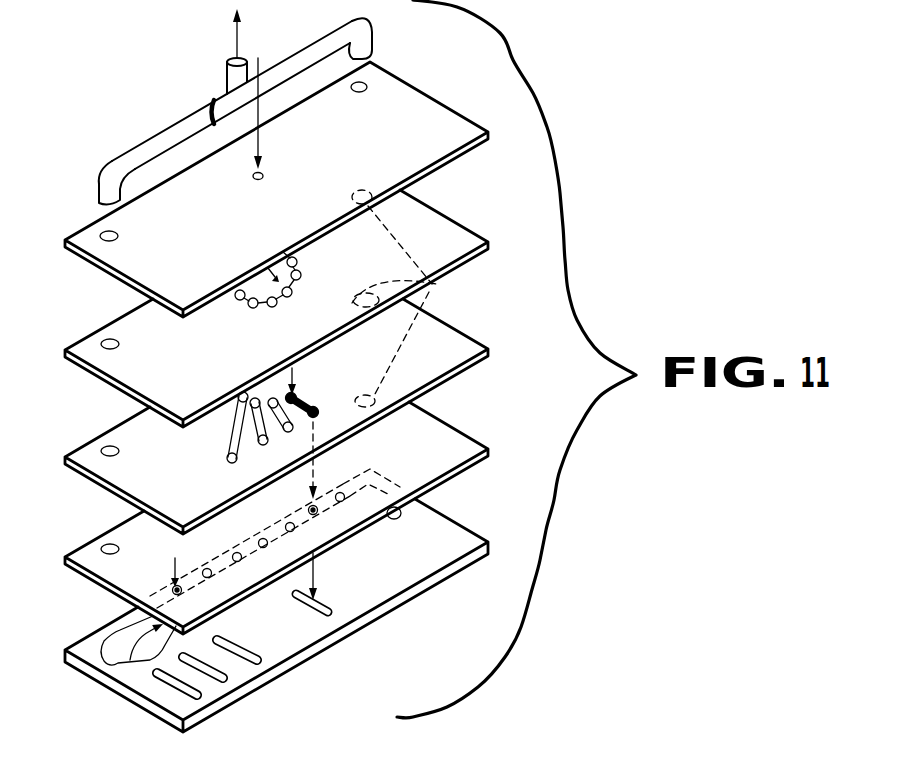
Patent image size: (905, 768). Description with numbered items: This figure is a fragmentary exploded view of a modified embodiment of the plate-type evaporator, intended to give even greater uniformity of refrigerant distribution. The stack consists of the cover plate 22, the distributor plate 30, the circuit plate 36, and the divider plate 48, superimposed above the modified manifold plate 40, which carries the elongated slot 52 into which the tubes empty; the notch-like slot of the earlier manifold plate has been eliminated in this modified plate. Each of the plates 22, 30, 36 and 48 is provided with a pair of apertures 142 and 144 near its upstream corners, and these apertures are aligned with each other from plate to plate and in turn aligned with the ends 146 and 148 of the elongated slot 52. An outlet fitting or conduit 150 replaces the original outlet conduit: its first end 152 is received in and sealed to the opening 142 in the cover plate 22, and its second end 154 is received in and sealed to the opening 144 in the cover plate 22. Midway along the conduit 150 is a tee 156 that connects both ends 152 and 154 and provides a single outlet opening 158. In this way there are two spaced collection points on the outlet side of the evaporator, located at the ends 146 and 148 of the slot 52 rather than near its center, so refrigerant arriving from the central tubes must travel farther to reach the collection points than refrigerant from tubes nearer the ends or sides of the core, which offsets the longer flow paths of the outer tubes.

The cover plate 22 is at (456, 138).
The distributor plate 30 is at (474, 246).
The circuit plate 36 is at (474, 344).
The divider plate 48 is at (474, 448).
The base plate 40 is at (273, 615).
The elongated slot 52 is at (240, 595).
The aperture 142 is at (110, 339).
The aperture 144 is at (368, 88).
The end of elongated slot 146 is at (114, 647).
The end of elongated slot 148 is at (398, 519).
The outlet fitting or conduit 150 is at (269, 127).
The first end 152 is at (120, 198).
The second end 154 is at (372, 45).
The tee 156 is at (235, 110).
The single outlet opening 158 is at (245, 83).